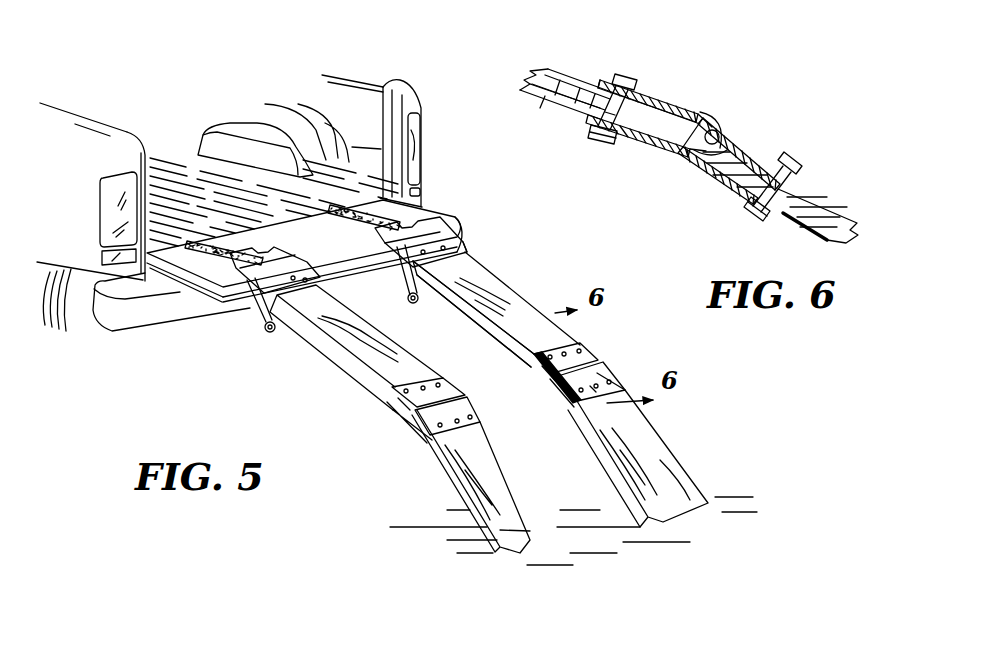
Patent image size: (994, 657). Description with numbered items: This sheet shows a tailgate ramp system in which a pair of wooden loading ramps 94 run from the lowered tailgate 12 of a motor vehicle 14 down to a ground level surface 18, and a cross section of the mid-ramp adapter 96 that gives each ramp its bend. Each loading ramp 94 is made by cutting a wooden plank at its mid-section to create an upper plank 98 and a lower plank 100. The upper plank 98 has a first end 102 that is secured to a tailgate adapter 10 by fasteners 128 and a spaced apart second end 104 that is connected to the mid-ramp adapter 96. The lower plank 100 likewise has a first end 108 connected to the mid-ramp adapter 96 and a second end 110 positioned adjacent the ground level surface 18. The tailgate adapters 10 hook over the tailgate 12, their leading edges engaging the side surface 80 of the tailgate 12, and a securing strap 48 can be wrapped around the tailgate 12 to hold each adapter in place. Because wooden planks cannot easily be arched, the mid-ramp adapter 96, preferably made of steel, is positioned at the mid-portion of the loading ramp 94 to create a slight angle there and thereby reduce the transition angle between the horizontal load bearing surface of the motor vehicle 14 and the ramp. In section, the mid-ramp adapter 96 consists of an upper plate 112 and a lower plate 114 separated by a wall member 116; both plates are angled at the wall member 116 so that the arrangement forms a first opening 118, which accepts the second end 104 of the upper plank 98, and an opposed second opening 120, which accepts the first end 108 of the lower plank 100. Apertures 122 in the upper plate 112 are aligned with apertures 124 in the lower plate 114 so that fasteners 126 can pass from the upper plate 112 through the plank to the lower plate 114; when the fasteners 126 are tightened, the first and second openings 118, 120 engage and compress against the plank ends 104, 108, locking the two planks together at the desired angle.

In FIG. 5, the tailgate adapter 10 is at (418, 223).
In FIG. 5, the tailgate 12 is at (180, 272).
In FIG. 5, the motor vehicle 14 is at (100, 150).
In FIG. 5, the ground level surface 18 is at (583, 537).
In FIG. 5, the securing strap 48 is at (538, 364).
In FIG. 5, the side surface 80 is at (349, 262).
In FIG. 5, the loading ramp 94 is at (508, 303).
In FIG. 5, the mid-ramp adapter 96 is at (617, 355).
In FIG. 5, the upper plank 98 is at (548, 333).
In FIG. 6, the upper plank 98 is at (590, 87).
In FIG. 5, the lower plank 100 is at (660, 458).
In FIG. 5, the first end 102 is at (468, 250).
In FIG. 5, the second end 104 is at (526, 334).
In FIG. 6, the second end 104 is at (563, 92).
In FIG. 5, the first end 108 is at (606, 410).
In FIG. 6, the first end 108 is at (823, 207).
In FIG. 5, the second end 110 is at (687, 498).
In FIG. 5, the upper plate 112 is at (597, 373).
In FIG. 6, the upper plate 112 is at (680, 97).
In FIG. 5, the lower plate 114 is at (560, 388).
In FIG. 6, the lower plate 114 is at (653, 168).
In FIG. 6, the wall member 116 is at (730, 137).
In FIG. 6, the first opening 118 is at (657, 117).
In FIG. 5, the second opening 120 is at (567, 397).
In FIG. 6, the second opening 120 is at (748, 157).
In FIG. 5, the apertures 122 is at (537, 355).
In FIG. 6, the apertures 122 is at (653, 85).
In FIG. 6, the apertures 124 is at (593, 124).
In FIG. 5, the fasteners 126 is at (583, 350).
In FIG. 6, the fasteners 126 is at (630, 73).
In FIG. 5, the fasteners 128 is at (593, 387).
In FIG. 6, the fasteners 128 is at (790, 160).